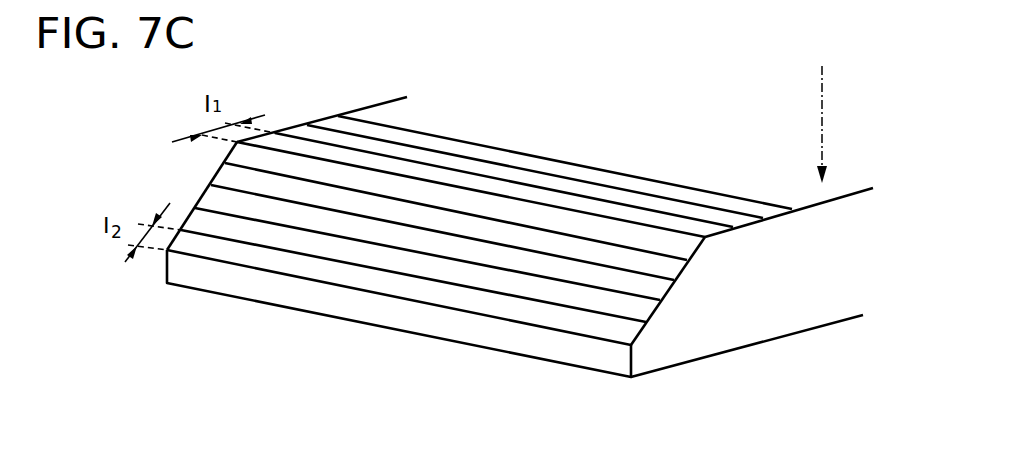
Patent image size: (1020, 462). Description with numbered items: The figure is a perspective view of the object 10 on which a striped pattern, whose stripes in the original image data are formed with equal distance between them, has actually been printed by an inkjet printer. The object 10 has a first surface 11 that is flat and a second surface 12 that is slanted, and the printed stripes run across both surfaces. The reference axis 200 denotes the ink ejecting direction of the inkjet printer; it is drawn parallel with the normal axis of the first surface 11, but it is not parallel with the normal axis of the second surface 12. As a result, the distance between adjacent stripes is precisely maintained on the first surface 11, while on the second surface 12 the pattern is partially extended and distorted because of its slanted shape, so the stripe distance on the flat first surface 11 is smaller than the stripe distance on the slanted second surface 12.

The object 10 is at (652, 156).
The first surface 11 is at (333, 122).
The second surface 12 is at (204, 203).
The reference axis 200 is at (823, 74).